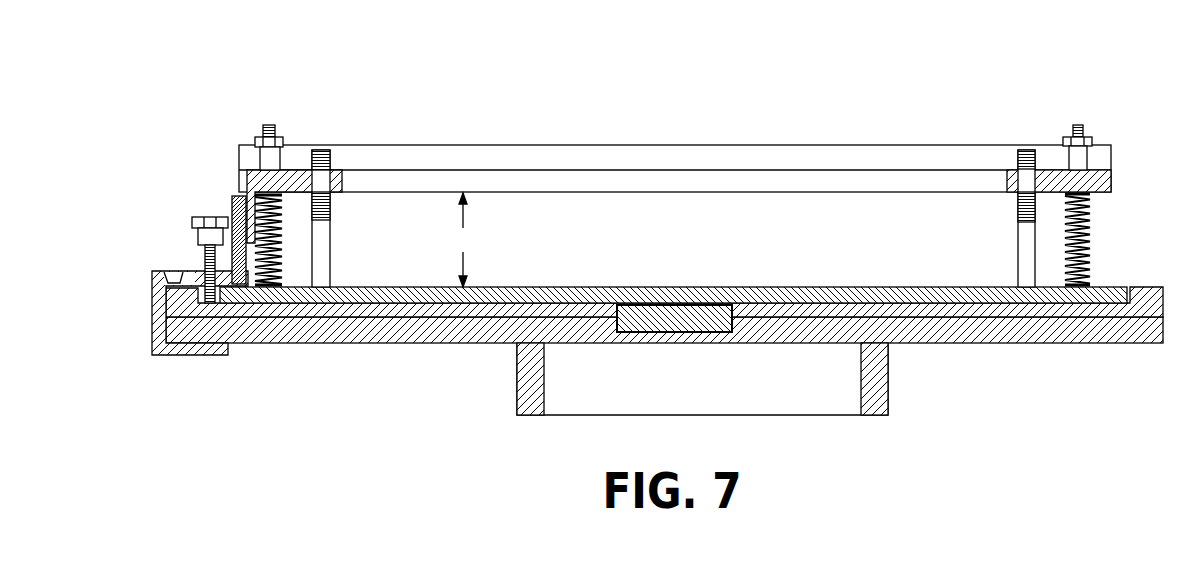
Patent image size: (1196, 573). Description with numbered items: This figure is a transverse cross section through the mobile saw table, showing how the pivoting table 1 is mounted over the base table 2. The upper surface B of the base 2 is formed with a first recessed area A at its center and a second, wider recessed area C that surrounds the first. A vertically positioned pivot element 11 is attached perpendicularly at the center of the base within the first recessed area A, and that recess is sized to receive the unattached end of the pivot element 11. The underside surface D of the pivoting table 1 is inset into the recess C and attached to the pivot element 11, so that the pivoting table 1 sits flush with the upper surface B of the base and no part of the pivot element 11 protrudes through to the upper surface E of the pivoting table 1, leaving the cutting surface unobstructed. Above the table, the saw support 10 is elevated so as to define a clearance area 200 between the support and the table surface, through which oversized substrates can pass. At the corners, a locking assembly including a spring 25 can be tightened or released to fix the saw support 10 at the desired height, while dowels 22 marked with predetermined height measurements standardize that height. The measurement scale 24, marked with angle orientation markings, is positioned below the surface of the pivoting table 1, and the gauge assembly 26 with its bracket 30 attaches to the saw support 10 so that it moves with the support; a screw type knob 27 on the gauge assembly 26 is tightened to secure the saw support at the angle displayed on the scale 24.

The pivoting table 1 is at (757, 287).
The base table 2 is at (890, 300).
The saw support 10 is at (612, 145).
The pivot element 11 is at (693, 322).
The dowel 22 is at (323, 150).
The measurement scale 24 is at (180, 287).
The spring 25 is at (262, 133).
The gauge assembly 26 is at (152, 298).
The screw type knob 27 is at (198, 217).
The bracket 30 is at (233, 203).
The clearance area 200 is at (462, 240).
The first recessed area A is at (657, 333).
The upper surface of the base B is at (397, 307).
The second recessed area C is at (1128, 288).
The underside surface of the pivoting table D is at (532, 302).
The upper surface of the pivoting table E is at (985, 287).